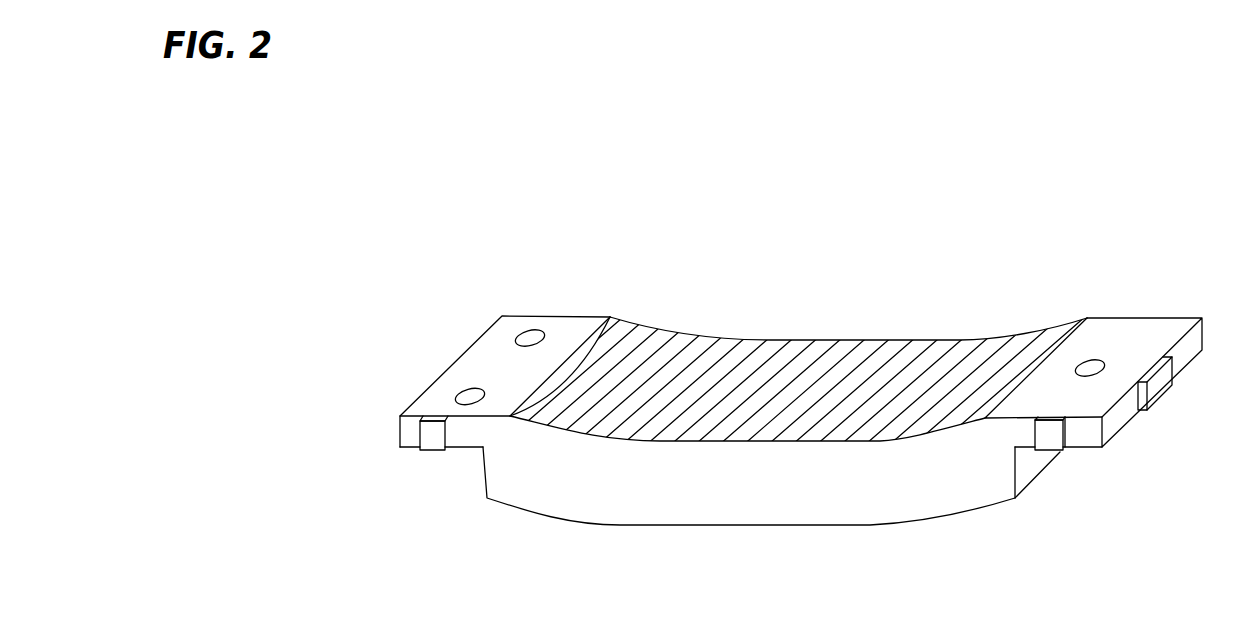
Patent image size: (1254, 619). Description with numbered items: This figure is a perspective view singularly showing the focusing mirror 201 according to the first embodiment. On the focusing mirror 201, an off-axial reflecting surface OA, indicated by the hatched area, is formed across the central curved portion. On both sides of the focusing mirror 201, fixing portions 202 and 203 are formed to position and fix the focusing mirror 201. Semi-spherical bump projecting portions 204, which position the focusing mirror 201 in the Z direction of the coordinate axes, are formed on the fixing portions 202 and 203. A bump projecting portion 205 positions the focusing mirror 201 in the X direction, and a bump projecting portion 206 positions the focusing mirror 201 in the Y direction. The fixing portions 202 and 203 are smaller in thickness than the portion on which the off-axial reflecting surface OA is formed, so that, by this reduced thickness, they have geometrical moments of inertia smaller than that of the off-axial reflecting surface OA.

The focusing mirror 201 is at (683, 493).
The fixing portion 202 is at (433, 403).
The fixing portion 203 is at (1142, 330).
The semi-spherical bump projecting portions 204 is at (471, 391).
The bump projecting portion 205 is at (1162, 384).
The bump projecting portion 206 is at (432, 442).
The off-axial reflecting surface OA is at (752, 362).